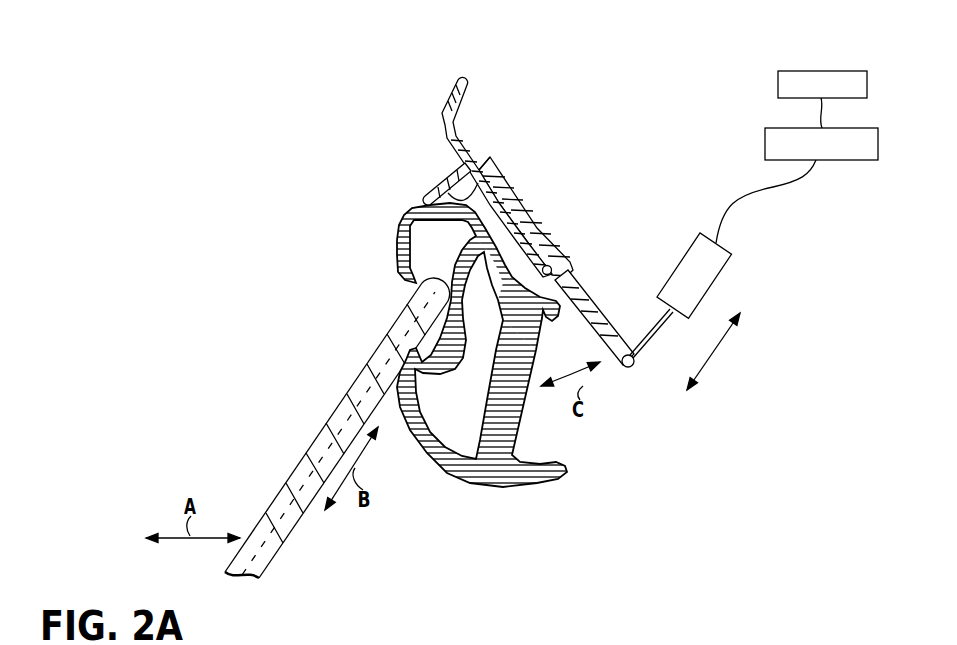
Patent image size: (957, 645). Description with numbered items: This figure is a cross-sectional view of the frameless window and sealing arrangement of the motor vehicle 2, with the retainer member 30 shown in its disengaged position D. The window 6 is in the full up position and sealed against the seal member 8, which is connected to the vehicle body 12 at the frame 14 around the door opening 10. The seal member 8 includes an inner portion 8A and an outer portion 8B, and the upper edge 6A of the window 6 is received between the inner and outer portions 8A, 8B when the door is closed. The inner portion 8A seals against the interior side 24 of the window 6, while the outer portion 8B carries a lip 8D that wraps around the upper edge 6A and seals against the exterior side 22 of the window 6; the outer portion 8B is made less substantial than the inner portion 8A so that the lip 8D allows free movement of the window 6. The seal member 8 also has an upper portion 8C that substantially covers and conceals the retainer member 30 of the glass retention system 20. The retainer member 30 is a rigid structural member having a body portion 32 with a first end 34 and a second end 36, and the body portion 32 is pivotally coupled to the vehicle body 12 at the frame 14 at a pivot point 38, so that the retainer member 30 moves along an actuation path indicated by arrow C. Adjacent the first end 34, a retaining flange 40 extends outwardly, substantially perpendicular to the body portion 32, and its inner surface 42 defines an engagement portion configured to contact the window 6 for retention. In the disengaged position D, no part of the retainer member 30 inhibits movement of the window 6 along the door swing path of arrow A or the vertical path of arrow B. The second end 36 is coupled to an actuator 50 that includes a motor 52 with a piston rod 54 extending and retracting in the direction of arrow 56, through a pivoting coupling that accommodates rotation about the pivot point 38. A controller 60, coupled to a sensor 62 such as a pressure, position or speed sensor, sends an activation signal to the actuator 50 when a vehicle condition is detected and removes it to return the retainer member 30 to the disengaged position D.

The motor vehicle 2 is at (407, 93).
The window 6 is at (327, 428).
The upper edge of the window 6A is at (430, 287).
The seal member 8 is at (465, 334).
The inner portion of the seal member 8A is at (553, 447).
The outer portion of the seal member 8B is at (387, 240).
The upper portion of the seal member 8C is at (518, 270).
The lip 8D is at (428, 270).
The door opening 10 is at (514, 240).
The vehicle body 12 is at (476, 157).
The frame 14 is at (447, 100).
The glass retention system 20 is at (514, 240).
The exterior side of the window 22 is at (362, 380).
The second panel surface 24 is at (303, 523).
The retainer member 30 is at (603, 293).
The body portion 32 is at (513, 257).
The first end 34 is at (476, 164).
The second end 36 is at (616, 368).
The pivot point 38 is at (566, 276).
The retaining flange 40 is at (440, 178).
The inner surface of the retaining flange 42 is at (474, 194).
The actuator 50 is at (715, 324).
The motor 52 is at (731, 256).
The piston rod 54 is at (648, 340).
The arrow 56 is at (717, 343).
The controller 60 is at (765, 143).
The sensor 62 is at (778, 85).